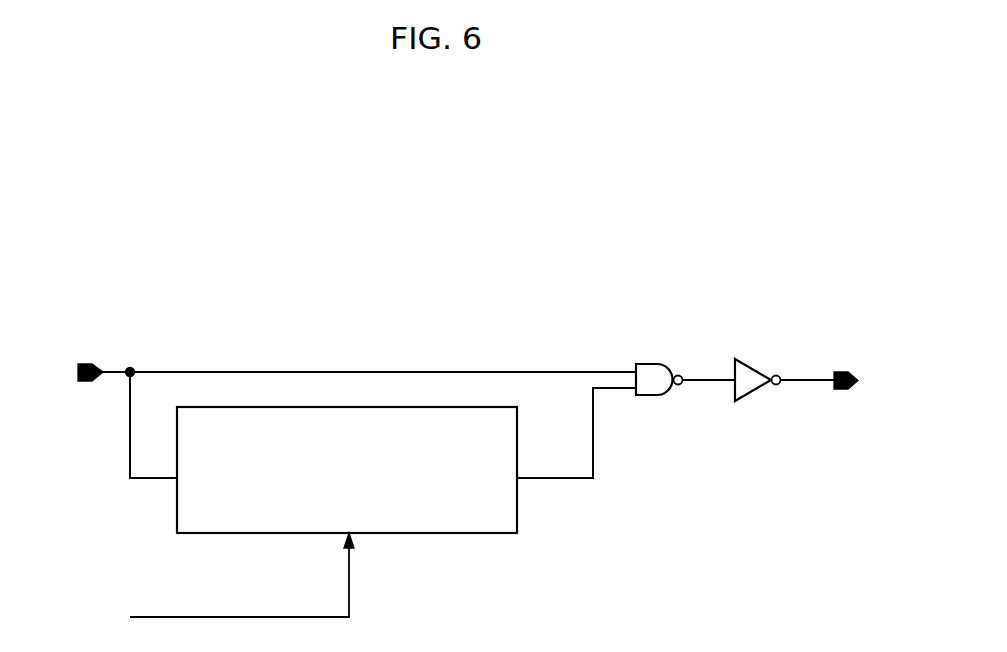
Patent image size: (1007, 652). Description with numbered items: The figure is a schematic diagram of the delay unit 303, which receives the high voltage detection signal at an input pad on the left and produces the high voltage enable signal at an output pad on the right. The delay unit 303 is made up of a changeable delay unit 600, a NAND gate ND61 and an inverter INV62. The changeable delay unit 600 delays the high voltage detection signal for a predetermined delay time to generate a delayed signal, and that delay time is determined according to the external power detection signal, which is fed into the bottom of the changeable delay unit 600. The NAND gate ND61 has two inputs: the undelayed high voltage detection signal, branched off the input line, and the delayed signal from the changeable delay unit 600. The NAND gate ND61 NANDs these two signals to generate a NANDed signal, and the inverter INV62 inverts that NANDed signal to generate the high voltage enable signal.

The delay unit 303 is at (695, 207).
The changeable delay unit 600 is at (517, 515).
The NAND gate ND61 is at (660, 364).
The inverter INV62 is at (757, 366).